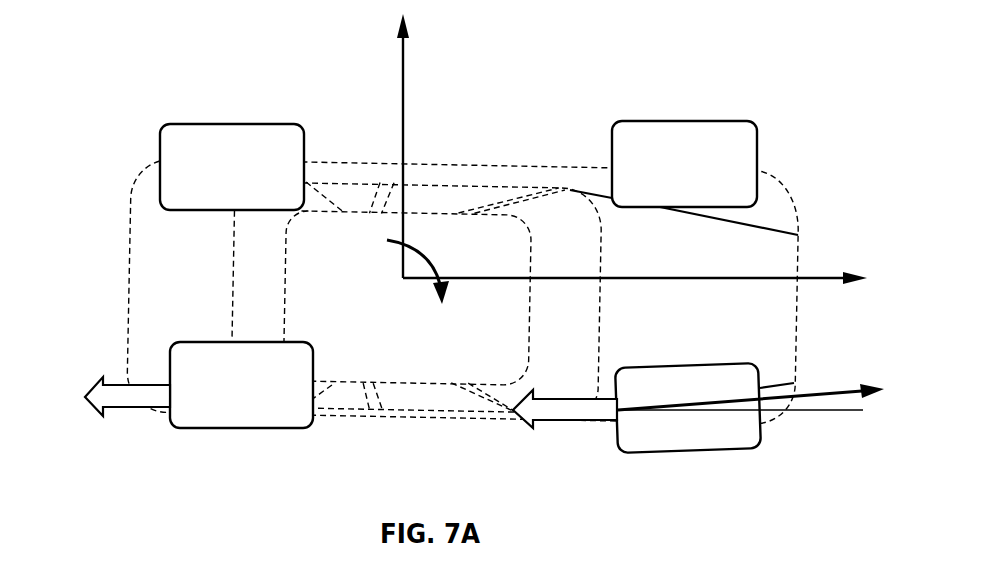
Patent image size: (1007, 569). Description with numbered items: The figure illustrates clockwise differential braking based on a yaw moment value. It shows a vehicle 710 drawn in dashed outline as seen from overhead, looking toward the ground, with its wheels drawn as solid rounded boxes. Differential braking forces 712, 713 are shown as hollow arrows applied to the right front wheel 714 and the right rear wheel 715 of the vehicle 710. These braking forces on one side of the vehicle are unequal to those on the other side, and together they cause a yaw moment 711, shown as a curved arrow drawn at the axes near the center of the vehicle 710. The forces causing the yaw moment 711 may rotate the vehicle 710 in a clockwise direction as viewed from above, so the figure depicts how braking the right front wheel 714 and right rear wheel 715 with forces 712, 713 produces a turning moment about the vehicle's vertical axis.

The vehicle 710 is at (118, 44).
The yaw moment 711 is at (413, 245).
The differential braking force 712 is at (577, 421).
The differential braking force 713 is at (137, 407).
The right front wheel 714 is at (690, 452).
The right rear wheel 715 is at (241, 429).